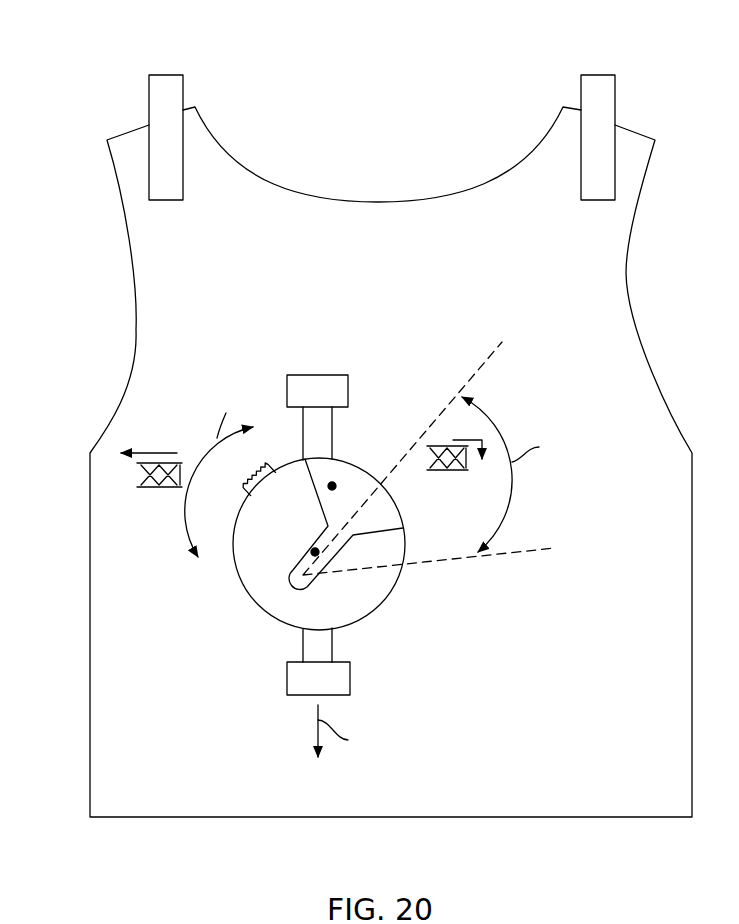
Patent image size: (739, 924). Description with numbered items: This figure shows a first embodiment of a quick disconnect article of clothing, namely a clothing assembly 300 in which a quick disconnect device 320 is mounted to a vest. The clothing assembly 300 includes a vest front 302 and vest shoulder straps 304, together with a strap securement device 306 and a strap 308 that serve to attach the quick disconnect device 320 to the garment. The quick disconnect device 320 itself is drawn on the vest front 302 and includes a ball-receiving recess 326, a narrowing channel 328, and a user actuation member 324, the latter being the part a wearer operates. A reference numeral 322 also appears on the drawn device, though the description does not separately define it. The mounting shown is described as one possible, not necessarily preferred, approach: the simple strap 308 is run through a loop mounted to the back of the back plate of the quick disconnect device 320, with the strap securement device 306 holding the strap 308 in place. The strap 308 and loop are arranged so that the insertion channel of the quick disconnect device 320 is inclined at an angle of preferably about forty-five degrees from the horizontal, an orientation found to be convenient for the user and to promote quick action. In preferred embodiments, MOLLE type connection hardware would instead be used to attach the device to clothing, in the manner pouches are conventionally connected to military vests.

The clothing assembly 300 is at (84, 65).
The vest front 302 is at (520, 817).
The vest shoulder straps 304 is at (183, 88).
The strap securement device 306 is at (348, 388).
The strap 308 is at (333, 420).
The quick disconnect device 320 is at (397, 620).
The rotatable dial 322 is at (405, 578).
The user actuation member 324 is at (268, 466).
The ball-receiving recess 326 is at (312, 550).
The narrowing channel 328 is at (336, 486).